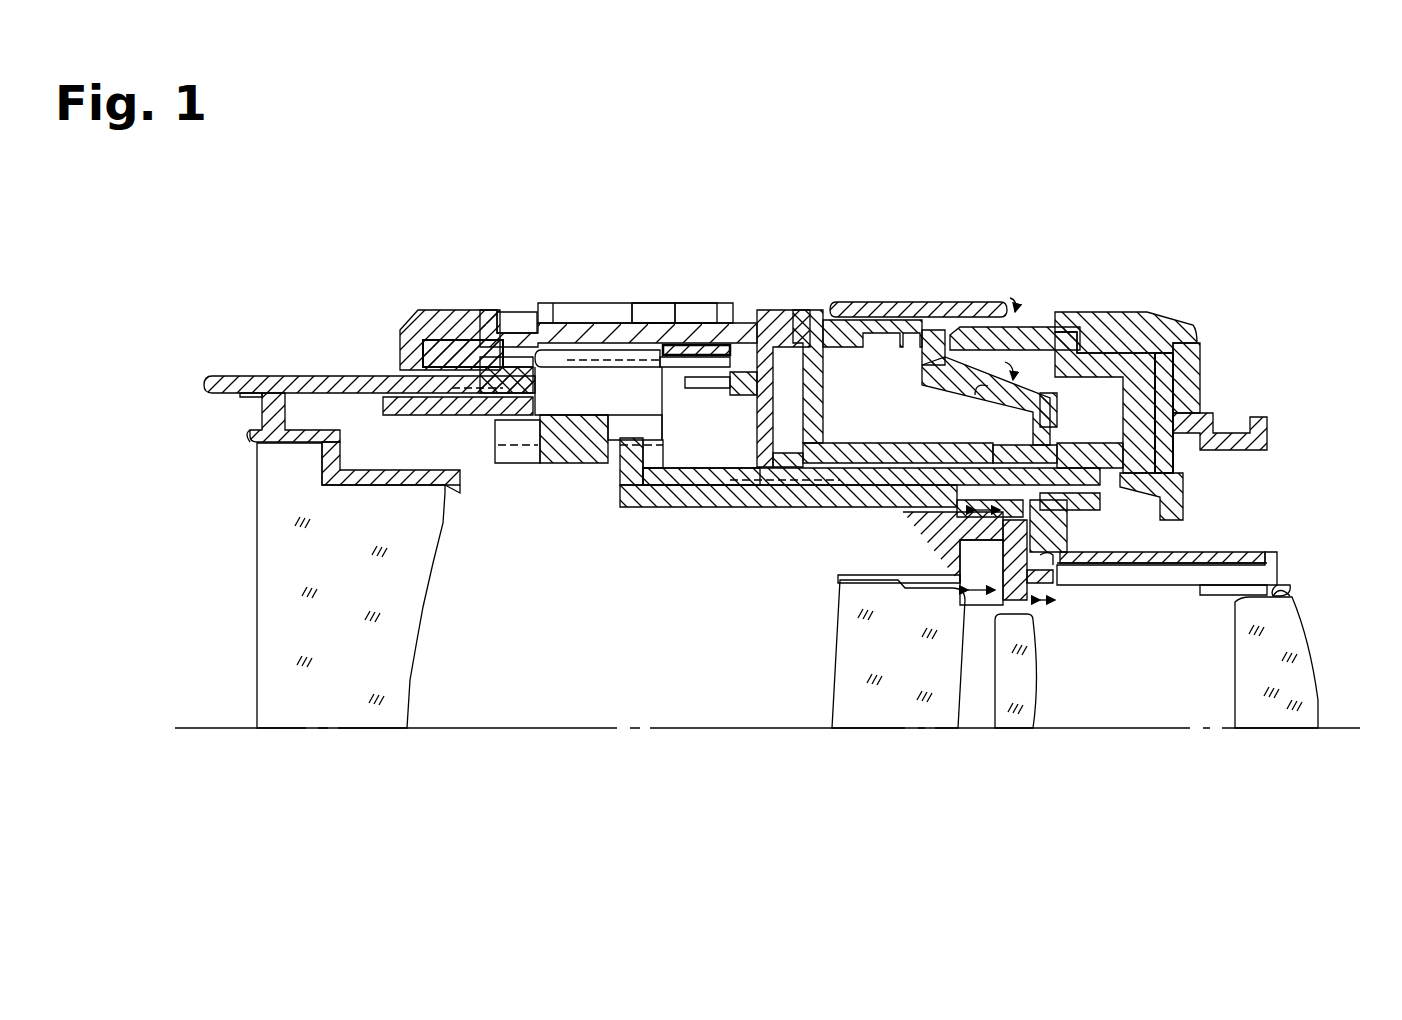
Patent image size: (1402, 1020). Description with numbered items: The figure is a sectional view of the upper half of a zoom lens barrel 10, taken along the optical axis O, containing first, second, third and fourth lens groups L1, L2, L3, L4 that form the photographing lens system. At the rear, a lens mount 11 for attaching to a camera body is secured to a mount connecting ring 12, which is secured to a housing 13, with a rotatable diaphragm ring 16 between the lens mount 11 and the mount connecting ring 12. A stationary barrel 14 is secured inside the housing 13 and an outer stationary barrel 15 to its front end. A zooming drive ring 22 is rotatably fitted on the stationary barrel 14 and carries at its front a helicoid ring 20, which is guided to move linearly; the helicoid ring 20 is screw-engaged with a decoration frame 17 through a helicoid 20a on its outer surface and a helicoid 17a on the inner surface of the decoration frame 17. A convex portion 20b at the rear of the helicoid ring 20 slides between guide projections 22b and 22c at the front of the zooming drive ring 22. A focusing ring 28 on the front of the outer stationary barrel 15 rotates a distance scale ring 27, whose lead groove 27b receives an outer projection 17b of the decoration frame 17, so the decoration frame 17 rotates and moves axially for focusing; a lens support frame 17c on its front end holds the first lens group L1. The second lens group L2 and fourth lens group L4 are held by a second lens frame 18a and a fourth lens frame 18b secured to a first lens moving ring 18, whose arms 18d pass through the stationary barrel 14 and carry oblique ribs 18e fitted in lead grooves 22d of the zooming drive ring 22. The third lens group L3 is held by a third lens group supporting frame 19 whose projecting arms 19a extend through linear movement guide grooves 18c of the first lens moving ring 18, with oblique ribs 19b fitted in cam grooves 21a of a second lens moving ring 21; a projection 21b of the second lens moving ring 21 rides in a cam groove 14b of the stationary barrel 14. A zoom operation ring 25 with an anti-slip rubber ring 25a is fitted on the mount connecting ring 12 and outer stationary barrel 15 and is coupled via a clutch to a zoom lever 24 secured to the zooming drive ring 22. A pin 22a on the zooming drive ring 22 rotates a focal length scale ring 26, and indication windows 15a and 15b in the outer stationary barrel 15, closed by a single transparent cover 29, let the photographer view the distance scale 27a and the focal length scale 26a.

The zoom lens barrel 10 is at (745, 170).
The lens mount 11 is at (1187, 323).
The mount connecting ring 12 is at (1043, 327).
The housing 13 is at (812, 335).
The stationary barrel 14 is at (660, 507).
The cam groove 14b is at (1120, 500).
The outer stationary barrel 15 is at (512, 303).
The indication window 15a is at (607, 315).
The indication window 15b is at (695, 315).
The rotatable diaphragm ring 16 is at (1113, 333).
The decoration frame 17 is at (270, 387).
The helicoid 17a is at (358, 473).
The outer projection 17b is at (472, 340).
The lens support frame 17c is at (298, 390).
The first lens moving ring 18 is at (1250, 570).
The second lens frame 18a is at (865, 573).
The fourth lens frame 18b is at (1290, 587).
The linear movement guide groove 18c is at (1210, 590).
The arm 18d is at (957, 437).
The oblique rib 18e is at (983, 483).
The third lens group supporting frame 19 is at (1050, 643).
The projecting arm 19a is at (1040, 597).
The oblique rib 19b is at (1070, 557).
The helicoid ring 20 is at (537, 437).
The helicoid 20a is at (383, 383).
The convex portion 20b is at (575, 463).
The second lens moving ring 21 is at (1240, 547).
The cam groove 21a is at (1180, 570).
The projection 21b is at (1060, 500).
The zooming drive ring 22 is at (630, 483).
The pin 22a is at (737, 490).
The guide projection 22b is at (498, 435).
The guide projection 22c is at (617, 423).
The lead groove 22d is at (693, 482).
The zoom lever 24 is at (960, 465).
The zoom operation ring 25 is at (1020, 310).
The anti-slip rubber ring 25a is at (858, 310).
The focal length scale ring 26 is at (743, 317).
The focal length scale 26a is at (697, 320).
The distance scale ring 27 is at (533, 340).
The distance scale 27a is at (613, 340).
The lead groove 27b is at (600, 340).
The focusing ring 28 is at (410, 333).
The transparent cover 29 is at (652, 317).
The first lens group L1 is at (400, 662).
The second lens group L2 is at (850, 645).
The third lens group L3 is at (1020, 730).
The fourth lens group L4 is at (1305, 735).
The optical axis O is at (780, 727).